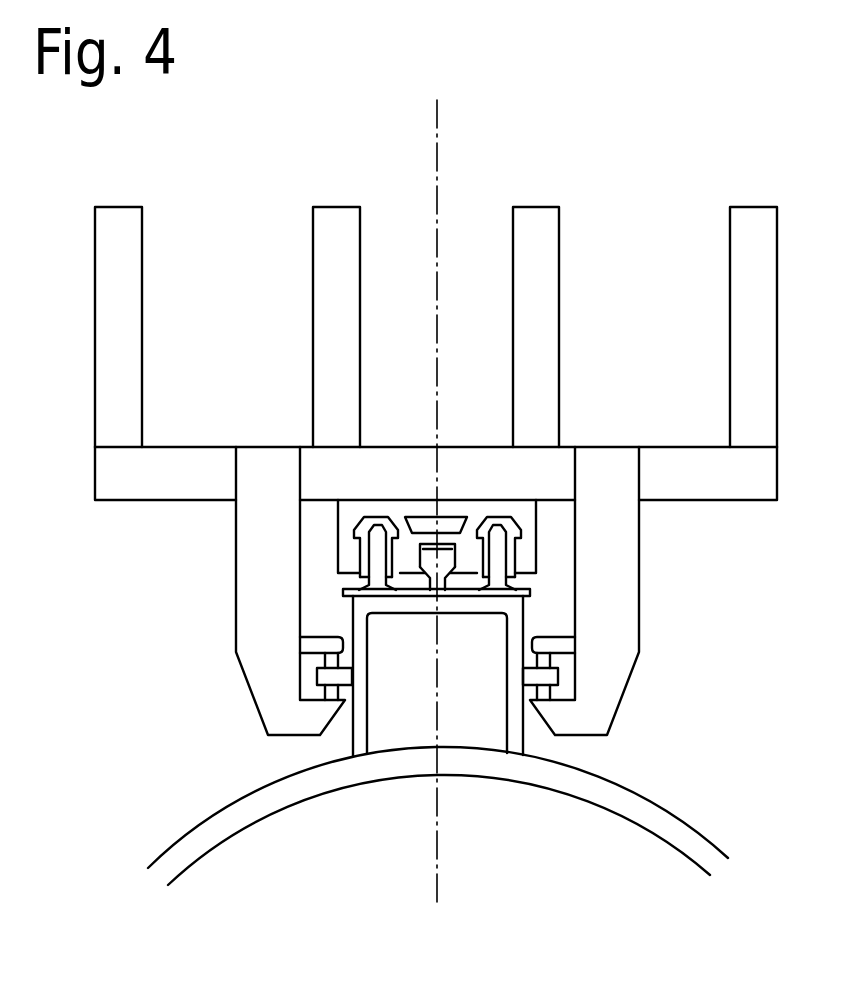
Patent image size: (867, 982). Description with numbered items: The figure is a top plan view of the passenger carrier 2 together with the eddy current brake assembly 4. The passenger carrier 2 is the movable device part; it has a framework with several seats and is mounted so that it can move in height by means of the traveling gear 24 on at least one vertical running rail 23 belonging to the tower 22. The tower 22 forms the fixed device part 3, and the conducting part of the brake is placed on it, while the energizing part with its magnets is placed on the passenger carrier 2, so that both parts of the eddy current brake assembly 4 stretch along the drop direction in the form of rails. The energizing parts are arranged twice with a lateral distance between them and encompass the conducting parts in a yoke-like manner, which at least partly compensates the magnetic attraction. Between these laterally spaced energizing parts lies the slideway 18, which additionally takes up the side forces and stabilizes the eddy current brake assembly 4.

The passenger carrier 2 is at (545, 273).
The eddy current brake assembly 4 is at (423, 663).
The traveling gear 24 is at (267, 662).
The vertical running rail 23 is at (548, 673).
The slideway 18 is at (432, 570).
The fixed device part 3 is at (387, 816).
The tower 22 is at (198, 843).